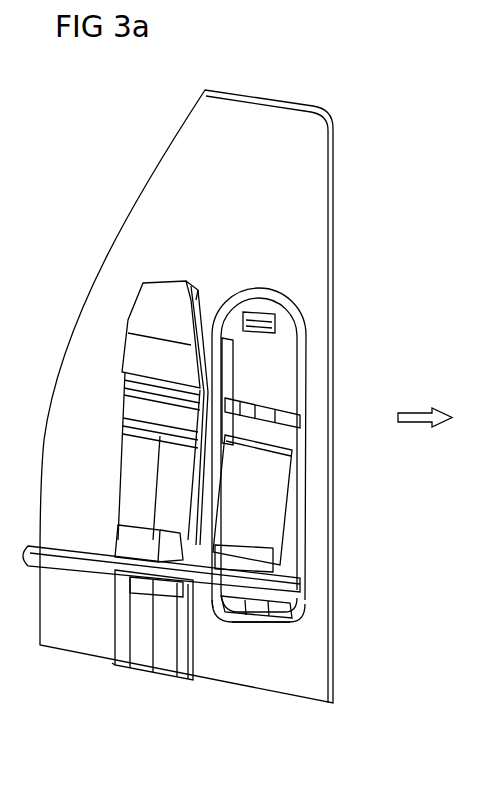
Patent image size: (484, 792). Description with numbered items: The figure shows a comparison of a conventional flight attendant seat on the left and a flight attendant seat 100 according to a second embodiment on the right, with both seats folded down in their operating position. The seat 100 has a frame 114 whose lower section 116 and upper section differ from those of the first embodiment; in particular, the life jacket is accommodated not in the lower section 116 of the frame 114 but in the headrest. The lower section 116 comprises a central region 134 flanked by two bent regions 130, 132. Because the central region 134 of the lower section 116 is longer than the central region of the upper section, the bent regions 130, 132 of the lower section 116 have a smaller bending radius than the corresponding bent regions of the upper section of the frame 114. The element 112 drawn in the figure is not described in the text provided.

The flight attendant seat 100 is at (222, 280).
The partition panel 112 is at (315, 157).
The frame 114 is at (293, 298).
The lower section 116 is at (305, 592).
The bent region 130 is at (218, 622).
The bent region 132 is at (310, 614).
The central region 134 is at (265, 628).